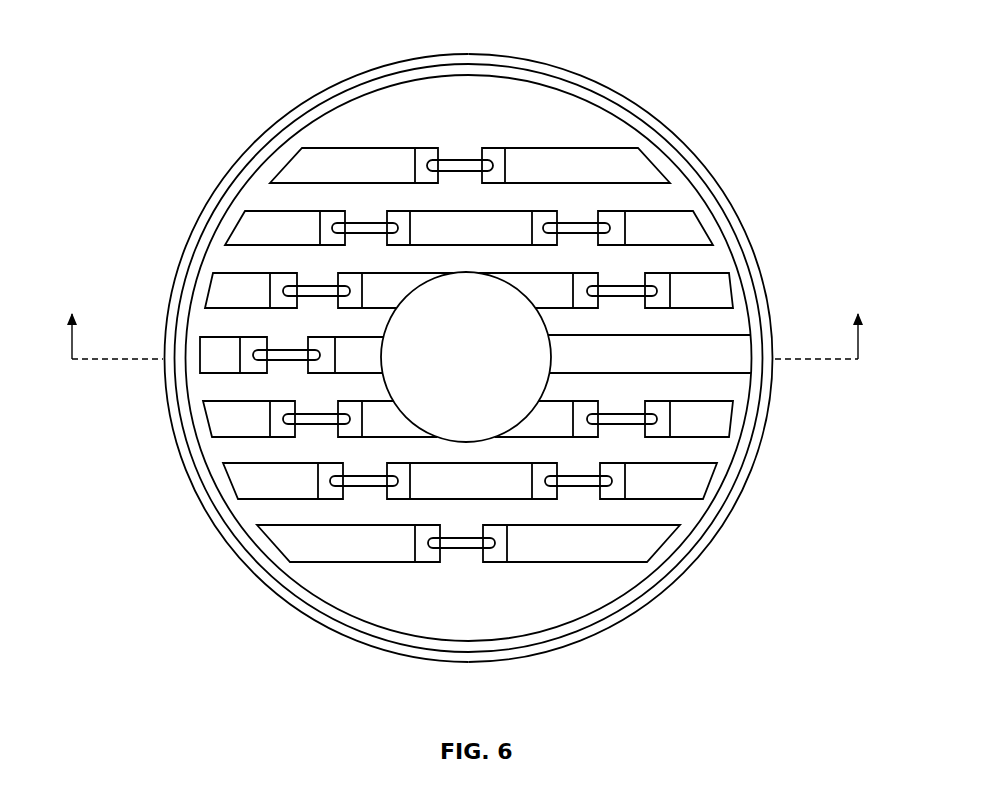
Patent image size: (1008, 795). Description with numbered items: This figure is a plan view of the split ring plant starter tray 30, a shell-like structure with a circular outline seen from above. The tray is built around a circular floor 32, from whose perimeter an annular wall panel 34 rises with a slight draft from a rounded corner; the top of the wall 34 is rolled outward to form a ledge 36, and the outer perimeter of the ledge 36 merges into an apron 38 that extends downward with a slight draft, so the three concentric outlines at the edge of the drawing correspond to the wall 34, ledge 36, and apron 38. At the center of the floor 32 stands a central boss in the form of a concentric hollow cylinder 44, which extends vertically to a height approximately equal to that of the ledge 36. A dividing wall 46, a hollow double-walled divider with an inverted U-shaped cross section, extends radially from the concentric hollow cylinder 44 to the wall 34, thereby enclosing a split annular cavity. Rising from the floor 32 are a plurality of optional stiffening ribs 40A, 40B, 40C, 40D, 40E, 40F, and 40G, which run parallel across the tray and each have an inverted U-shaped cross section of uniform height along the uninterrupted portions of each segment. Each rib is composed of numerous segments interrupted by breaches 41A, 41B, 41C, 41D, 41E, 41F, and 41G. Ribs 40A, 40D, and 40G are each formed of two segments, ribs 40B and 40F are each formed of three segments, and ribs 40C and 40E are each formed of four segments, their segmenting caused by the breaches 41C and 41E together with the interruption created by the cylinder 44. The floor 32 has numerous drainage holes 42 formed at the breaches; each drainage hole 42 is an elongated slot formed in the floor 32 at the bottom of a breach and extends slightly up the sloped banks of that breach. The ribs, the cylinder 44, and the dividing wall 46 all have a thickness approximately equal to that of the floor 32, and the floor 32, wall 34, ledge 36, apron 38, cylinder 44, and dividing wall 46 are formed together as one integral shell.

The split ring plant starter tray 30 is at (180, 46).
The circular floor 32 is at (400, 112).
The wall panel 34 is at (290, 585).
The ledge 36 is at (746, 437).
The apron 38 is at (737, 507).
The stiffening rib 40A is at (613, 157).
The stiffening rib 40B is at (250, 227).
The stiffening rib 40C is at (223, 288).
The stiffening rib 40D is at (208, 357).
The stiffening rib 40E is at (223, 430).
The stiffening rib 40F is at (248, 473).
The stiffening rib 40G is at (277, 539).
The breach 41A is at (455, 152).
The breach 41B is at (580, 211).
The breach 41C is at (628, 276).
The breach 41D is at (296, 364).
The breach 41E is at (630, 440).
The breach 41F is at (588, 497).
The breach 41G is at (452, 555).
The drainage hole 42 is at (568, 490).
The concentric hollow cylinder 44 is at (481, 370).
The dividing wall 46 is at (748, 360).